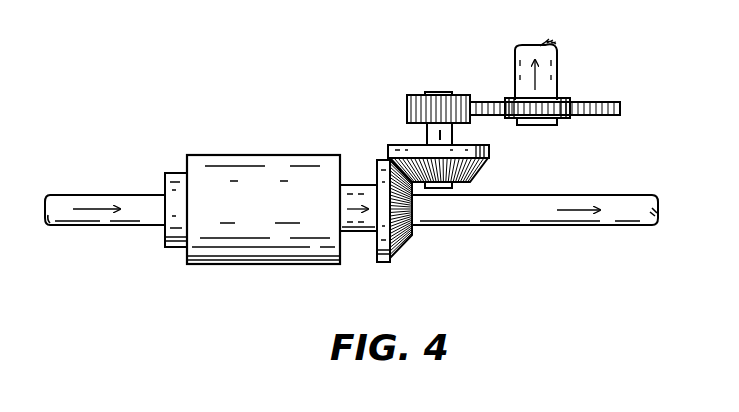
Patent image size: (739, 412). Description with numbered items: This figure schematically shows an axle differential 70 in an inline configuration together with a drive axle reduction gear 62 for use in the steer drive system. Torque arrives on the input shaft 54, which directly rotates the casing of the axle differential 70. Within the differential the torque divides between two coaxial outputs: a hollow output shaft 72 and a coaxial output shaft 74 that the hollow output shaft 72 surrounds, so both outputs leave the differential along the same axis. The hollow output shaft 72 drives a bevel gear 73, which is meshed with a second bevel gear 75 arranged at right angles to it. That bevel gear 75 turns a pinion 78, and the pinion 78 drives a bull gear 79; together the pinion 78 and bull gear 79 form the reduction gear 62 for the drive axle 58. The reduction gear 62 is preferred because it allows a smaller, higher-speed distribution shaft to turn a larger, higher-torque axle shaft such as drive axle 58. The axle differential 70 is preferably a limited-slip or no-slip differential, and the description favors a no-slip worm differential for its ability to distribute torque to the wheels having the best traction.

The input shaft 54 is at (63, 198).
The drive axle 58 is at (560, 58).
The reduction gear 62 is at (462, 78).
The axle differential 70 is at (252, 142).
The hollow output shaft 72 is at (362, 232).
The bevel gear 73 is at (404, 253).
The coaxial output shaft 74 is at (620, 218).
The bevel gear 75 is at (486, 168).
The pinion 78 is at (407, 103).
The bull gear 79 is at (620, 105).